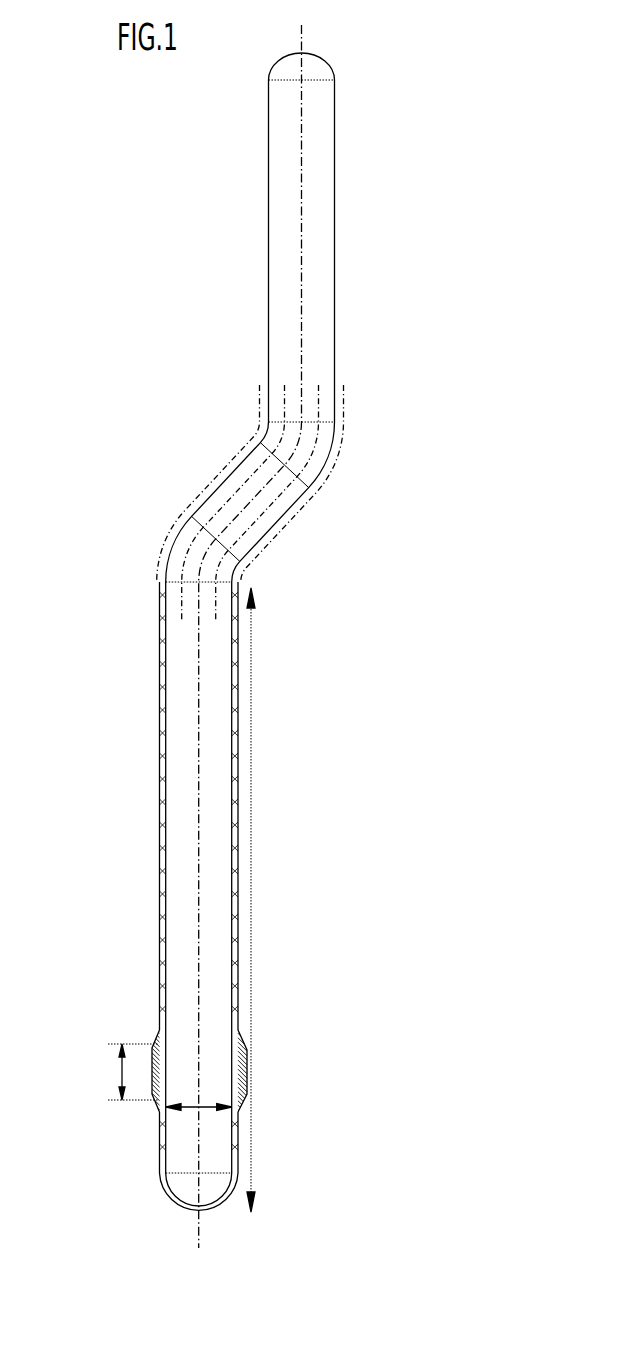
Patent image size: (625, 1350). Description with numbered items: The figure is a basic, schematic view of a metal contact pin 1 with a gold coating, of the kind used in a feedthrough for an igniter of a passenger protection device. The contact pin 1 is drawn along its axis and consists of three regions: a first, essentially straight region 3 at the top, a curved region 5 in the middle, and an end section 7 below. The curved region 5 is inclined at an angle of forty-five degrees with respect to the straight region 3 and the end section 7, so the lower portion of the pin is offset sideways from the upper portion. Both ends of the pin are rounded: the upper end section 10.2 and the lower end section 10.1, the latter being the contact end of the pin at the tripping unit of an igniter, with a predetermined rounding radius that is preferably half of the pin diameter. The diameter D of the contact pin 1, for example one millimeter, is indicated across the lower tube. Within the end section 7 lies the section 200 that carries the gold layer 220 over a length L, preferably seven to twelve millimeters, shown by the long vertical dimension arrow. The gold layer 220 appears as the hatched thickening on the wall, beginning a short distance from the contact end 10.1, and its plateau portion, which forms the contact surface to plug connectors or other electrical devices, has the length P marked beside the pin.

The contact pin 1 is at (245, 637).
The first straight region 3 is at (317, 274).
The curved region 5 is at (270, 493).
The end section 7 is at (240, 877).
The end section (contact end) 10.1 is at (213, 1188).
The end section 10.2 is at (318, 67).
The gold-coated section 200 is at (237, 733).
The gold layer 220 is at (247, 1068).
The length of gold-coated section L is at (252, 1021).
The diameter of the contact pin D is at (203, 1104).
The plateau length P is at (120, 1073).